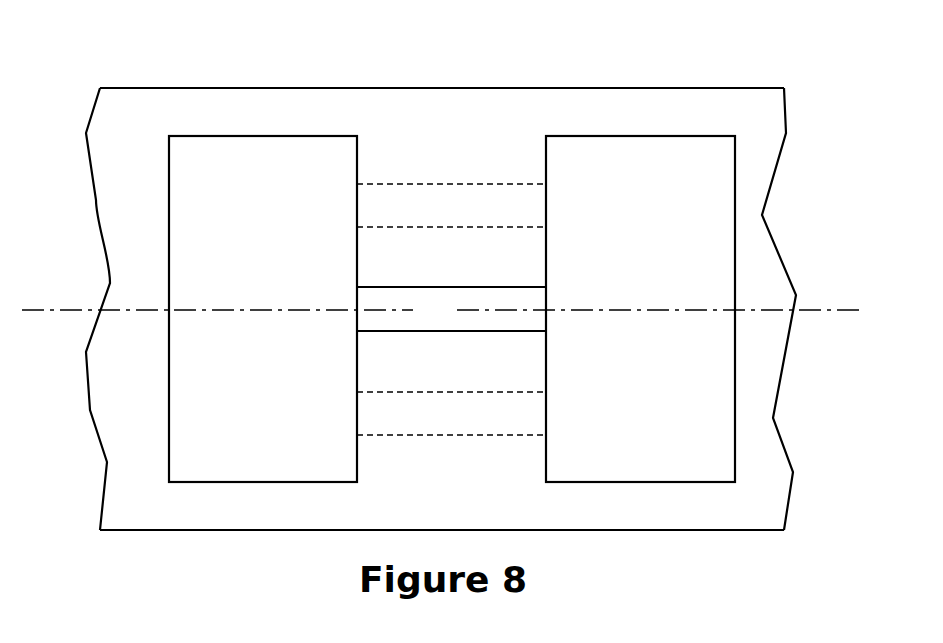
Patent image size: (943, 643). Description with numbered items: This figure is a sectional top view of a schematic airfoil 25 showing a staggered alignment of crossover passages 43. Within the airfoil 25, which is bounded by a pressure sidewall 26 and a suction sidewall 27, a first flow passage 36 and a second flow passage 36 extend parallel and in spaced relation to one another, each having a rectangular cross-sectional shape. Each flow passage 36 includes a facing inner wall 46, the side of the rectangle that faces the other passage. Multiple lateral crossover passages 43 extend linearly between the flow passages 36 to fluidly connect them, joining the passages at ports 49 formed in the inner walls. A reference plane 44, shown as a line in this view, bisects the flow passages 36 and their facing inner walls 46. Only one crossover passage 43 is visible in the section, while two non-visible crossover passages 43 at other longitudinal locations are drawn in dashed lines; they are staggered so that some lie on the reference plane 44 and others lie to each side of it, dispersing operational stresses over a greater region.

The airfoil 25 is at (240, 62).
The pressure sidewall 26 is at (389, 88).
The suction sidewall 27 is at (556, 530).
The flow passage 36 is at (219, 253).
The crossover passage 43 is at (418, 323).
The reference plane 44 is at (52, 310).
The facing inner wall 46 is at (357, 160).
The port 49 is at (357, 216).